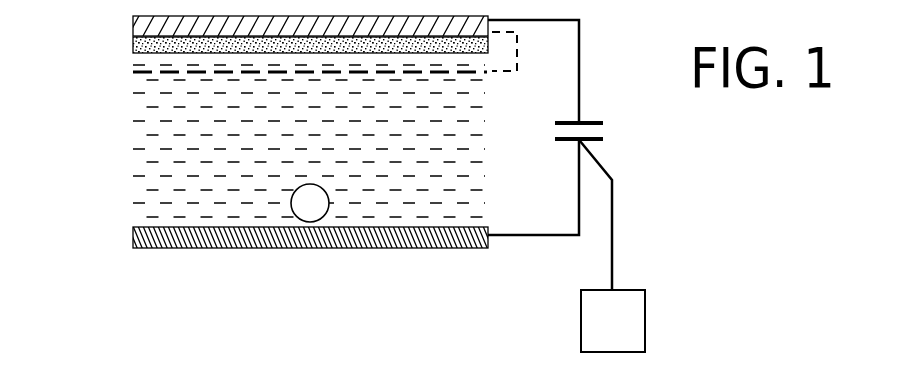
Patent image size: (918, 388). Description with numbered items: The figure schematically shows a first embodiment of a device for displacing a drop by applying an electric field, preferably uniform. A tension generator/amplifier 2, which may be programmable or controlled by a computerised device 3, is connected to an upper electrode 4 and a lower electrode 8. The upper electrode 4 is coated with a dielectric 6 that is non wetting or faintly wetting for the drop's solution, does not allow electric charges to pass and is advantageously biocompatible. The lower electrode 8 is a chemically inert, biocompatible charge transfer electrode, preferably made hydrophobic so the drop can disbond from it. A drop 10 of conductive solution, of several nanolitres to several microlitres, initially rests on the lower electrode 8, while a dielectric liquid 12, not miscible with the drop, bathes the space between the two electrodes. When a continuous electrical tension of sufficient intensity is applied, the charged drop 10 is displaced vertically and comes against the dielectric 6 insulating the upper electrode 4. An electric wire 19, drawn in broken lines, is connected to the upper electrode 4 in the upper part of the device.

The electrode 4 is at (133, 25).
The dielectric 6 is at (133, 46).
The electric wire 19 is at (148, 74).
The dielectric liquid 12 is at (163, 182).
The drop 10 is at (305, 198).
The electrode 8 is at (133, 240).
The tension generator/amplifier 2 is at (565, 141).
The computerised device 3 is at (636, 312).